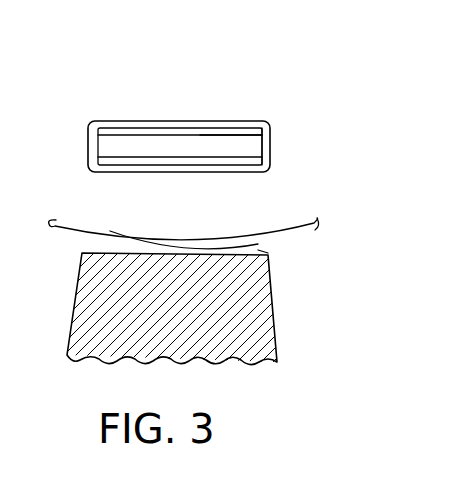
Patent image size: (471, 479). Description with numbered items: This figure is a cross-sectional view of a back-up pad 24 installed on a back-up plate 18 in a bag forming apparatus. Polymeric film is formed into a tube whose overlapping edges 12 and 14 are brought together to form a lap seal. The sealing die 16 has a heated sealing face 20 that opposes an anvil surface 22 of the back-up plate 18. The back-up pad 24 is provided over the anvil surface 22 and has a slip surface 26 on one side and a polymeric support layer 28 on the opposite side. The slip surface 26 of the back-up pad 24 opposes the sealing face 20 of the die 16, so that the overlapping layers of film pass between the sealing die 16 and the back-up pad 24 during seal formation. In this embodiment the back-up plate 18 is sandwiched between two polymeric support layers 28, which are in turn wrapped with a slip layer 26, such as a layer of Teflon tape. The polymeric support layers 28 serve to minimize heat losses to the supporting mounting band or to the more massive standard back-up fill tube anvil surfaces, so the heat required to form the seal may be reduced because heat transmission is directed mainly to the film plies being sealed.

The overlapping edge 12 is at (122, 230).
The overlapping edge 14 is at (248, 247).
The sealing die 16 is at (76, 301).
The back-up plate 18 is at (179, 143).
The heated sealing face 20 is at (257, 256).
The anvil surface 22 is at (183, 165).
The back-up pad 24 is at (178, 96).
The slip surface 26 is at (272, 167).
The polymeric support layer 28 is at (220, 164).